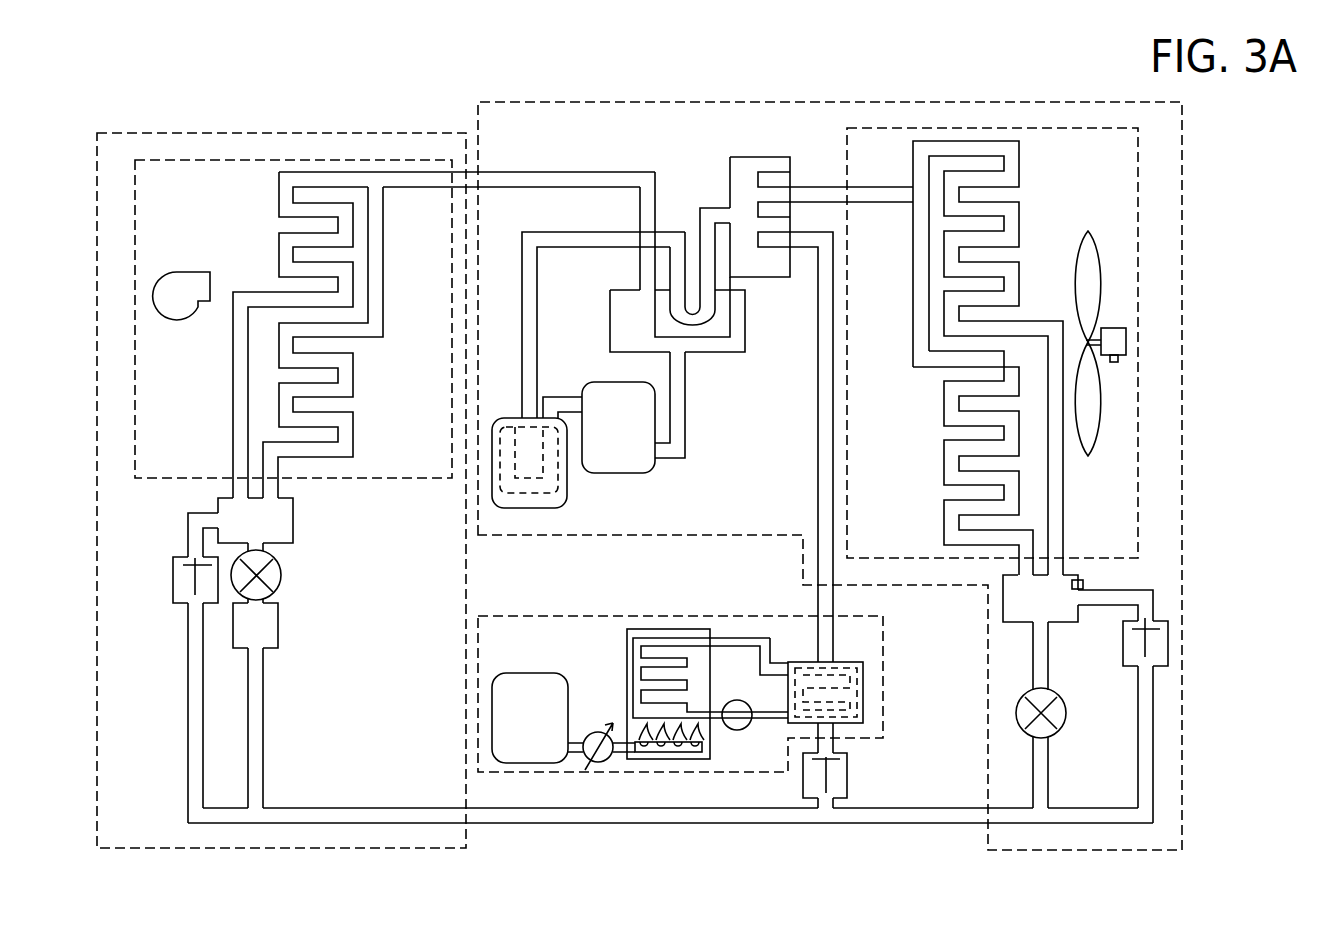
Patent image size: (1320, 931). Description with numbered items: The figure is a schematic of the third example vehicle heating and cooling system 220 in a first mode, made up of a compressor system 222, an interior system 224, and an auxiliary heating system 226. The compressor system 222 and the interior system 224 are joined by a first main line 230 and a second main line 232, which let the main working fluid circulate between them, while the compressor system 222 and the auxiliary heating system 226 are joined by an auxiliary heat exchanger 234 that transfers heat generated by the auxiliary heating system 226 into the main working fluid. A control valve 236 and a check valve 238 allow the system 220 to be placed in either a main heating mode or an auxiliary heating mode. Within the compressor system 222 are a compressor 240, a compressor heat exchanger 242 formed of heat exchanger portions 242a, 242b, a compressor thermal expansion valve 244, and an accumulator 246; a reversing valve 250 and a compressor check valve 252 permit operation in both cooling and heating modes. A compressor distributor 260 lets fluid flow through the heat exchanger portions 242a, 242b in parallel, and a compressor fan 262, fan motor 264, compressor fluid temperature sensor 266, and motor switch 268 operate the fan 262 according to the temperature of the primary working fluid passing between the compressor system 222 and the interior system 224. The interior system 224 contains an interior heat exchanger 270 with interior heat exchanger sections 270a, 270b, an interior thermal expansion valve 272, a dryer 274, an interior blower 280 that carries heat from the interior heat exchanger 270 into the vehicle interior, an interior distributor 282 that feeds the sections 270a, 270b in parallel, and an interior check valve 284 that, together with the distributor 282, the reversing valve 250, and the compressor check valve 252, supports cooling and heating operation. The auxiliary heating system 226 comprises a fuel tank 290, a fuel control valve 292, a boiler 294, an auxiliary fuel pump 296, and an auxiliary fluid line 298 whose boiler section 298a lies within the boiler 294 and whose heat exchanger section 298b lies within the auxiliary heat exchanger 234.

The vehicle heating and cooling system 220 is at (690, 472).
The compressor system 222 is at (1172, 197).
The interior system 224 is at (265, 138).
The auxiliary heating system 226 is at (558, 625).
The first main line 230 is at (418, 182).
The second main line 232 is at (392, 818).
The auxiliary heat exchanger 234 is at (858, 700).
The control valve 236 is at (737, 177).
The check valve 238 is at (848, 780).
The compressor 240 is at (618, 465).
The compressor heat exchanger 242 is at (1077, 137).
The heat exchanger portion 242a is at (1027, 200).
The heat exchanger portion 242b is at (935, 431).
The compressor thermal expansion valve 244 is at (1057, 717).
The accumulator 246 is at (552, 500).
The reversing valve 250 is at (617, 315).
The compressor check valve 252 is at (1160, 647).
The compressor distributor 260 is at (1013, 605).
The compressor fan 262 is at (1088, 285).
The fan motor 264 is at (1115, 337).
The compressor fluid temperature sensor 266 is at (1083, 583).
The motor switch 268 is at (1118, 362).
The interior heat exchanger 270 is at (190, 165).
The interior heat exchanger section 270a is at (267, 207).
The interior heat exchanger section 270b is at (368, 379).
The interior thermal expansion valve 272 is at (275, 578).
The dryer 274 is at (267, 625).
The interior blower 280 is at (183, 277).
The interior distributor 282 is at (287, 524).
The interior check valve 284 is at (178, 590).
The fuel tank 290 is at (528, 682).
The fuel control valve 292 is at (598, 757).
The boiler 294 is at (660, 628).
The auxiliary fuel pump 296 is at (738, 730).
The auxiliary fluid line 298 is at (737, 642).
The boiler section 298a is at (626, 662).
The heat exchanger section 298b is at (866, 667).